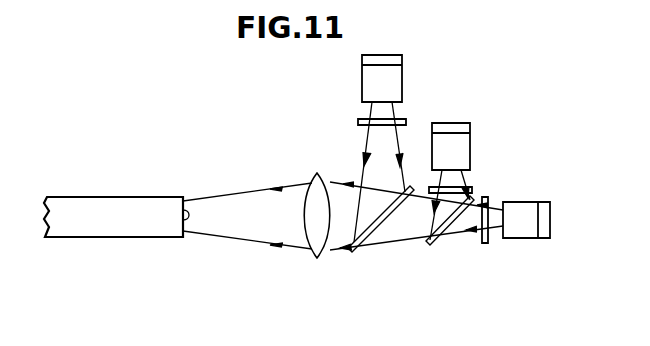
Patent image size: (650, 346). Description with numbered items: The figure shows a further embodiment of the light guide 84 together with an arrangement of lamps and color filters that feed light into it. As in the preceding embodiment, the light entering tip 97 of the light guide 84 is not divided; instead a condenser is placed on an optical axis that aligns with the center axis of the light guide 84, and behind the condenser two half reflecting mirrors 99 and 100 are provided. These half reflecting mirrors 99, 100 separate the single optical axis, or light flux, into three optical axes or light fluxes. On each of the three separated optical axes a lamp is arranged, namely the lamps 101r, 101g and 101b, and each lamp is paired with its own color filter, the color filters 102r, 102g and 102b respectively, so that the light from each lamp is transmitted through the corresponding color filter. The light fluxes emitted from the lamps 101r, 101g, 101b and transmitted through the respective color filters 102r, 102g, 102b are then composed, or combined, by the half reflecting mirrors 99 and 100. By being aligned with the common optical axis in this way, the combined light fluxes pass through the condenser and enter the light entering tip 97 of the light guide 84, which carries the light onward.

The light guide 84 is at (137, 197).
The light entering tip 97 is at (189, 214).
The half reflecting mirror 99 is at (352, 252).
The half reflecting mirror 100 is at (432, 246).
The lamp 101b is at (402, 72).
The color filter 102b is at (406, 119).
The lamp 101g is at (470, 140).
The color filter 102g is at (472, 187).
The lamp 101r is at (525, 238).
The color filter 102r is at (483, 243).